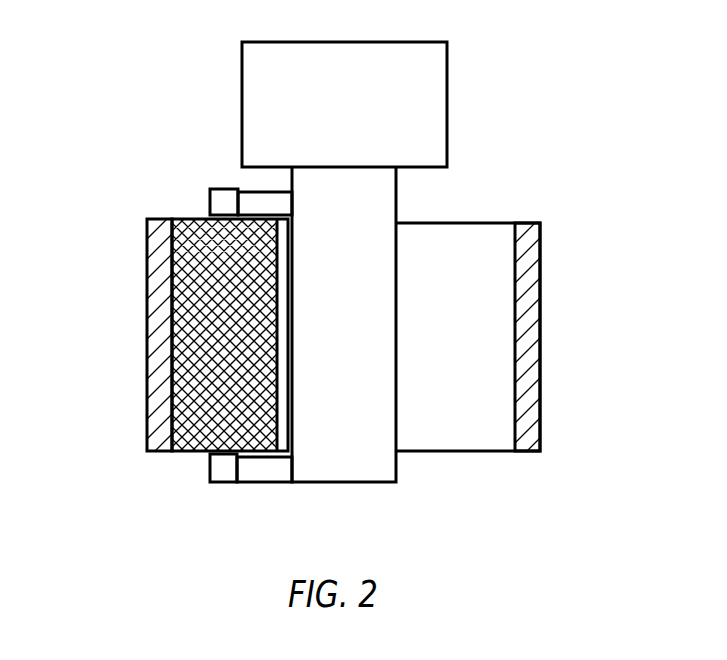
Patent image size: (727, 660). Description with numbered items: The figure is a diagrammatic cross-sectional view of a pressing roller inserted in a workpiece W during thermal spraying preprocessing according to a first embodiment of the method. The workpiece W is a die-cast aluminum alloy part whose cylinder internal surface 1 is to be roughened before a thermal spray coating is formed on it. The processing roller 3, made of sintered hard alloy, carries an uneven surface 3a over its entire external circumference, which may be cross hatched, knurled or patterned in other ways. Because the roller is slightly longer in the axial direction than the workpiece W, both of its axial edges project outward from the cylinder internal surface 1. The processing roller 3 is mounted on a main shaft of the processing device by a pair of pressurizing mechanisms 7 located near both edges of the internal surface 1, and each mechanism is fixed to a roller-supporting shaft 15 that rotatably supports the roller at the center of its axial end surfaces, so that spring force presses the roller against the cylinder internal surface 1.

The cylinder internal surface 1 is at (512, 415).
The processing roller 3 is at (180, 216).
The uneven surface 3a is at (172, 305).
The pressurizing mechanism 7 is at (257, 192).
The roller-supporting shaft 15 is at (207, 203).
The workpiece W is at (540, 280).